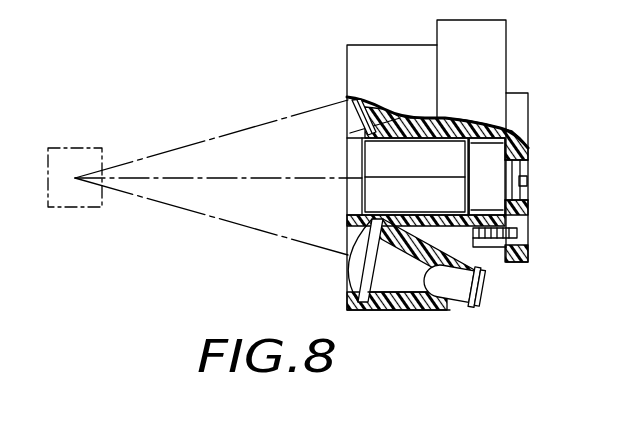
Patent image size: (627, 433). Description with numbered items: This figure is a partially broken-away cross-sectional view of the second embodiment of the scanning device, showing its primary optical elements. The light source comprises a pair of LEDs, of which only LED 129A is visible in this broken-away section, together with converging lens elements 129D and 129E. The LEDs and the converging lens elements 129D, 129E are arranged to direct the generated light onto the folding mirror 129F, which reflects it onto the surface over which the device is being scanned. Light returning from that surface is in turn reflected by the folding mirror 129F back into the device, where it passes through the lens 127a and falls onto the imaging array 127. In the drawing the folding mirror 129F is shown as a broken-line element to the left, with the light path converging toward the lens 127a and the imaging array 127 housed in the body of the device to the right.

The imaging array 127 is at (517, 172).
The lens 127a is at (397, 192).
The LED 129A is at (447, 290).
The converging lens element 129D is at (348, 268).
The converging lens element 129E is at (350, 106).
The folding mirror 129F is at (84, 143).